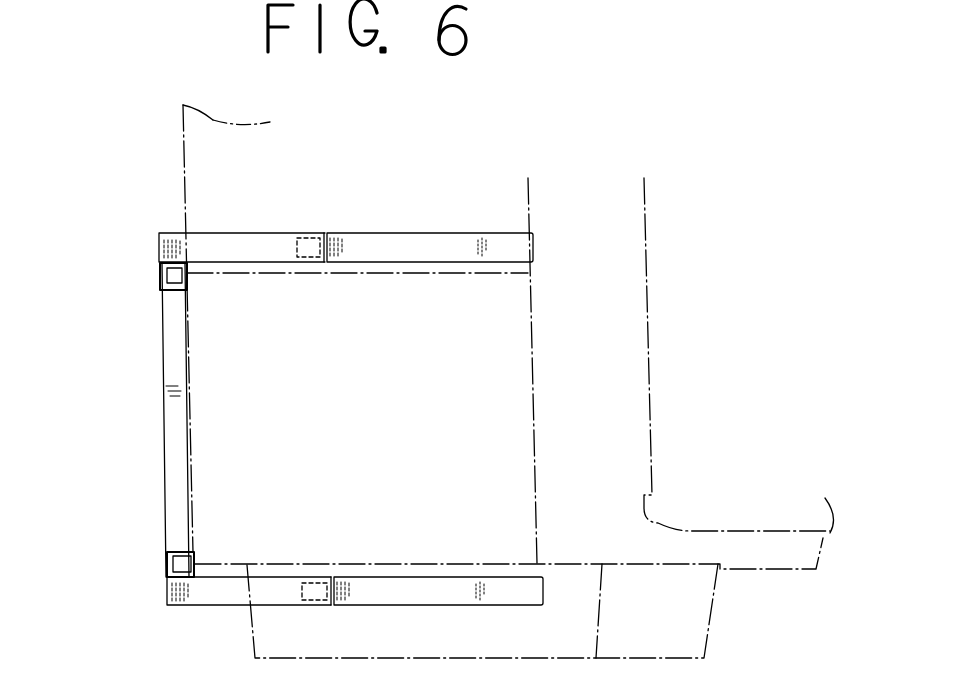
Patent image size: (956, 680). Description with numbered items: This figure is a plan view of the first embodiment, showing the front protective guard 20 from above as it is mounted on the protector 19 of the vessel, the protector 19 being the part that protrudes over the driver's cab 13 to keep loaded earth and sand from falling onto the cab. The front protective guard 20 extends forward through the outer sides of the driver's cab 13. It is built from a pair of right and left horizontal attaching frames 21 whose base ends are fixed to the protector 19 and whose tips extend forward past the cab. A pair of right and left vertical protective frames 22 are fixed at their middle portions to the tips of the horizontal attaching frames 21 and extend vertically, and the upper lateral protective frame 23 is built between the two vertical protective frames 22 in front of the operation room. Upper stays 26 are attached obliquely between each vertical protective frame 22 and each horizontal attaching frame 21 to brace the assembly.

The driver's cab 13 is at (210, 338).
The protector 19 is at (193, 150).
The front protective guard 20 is at (138, 421).
The horizontal attaching frame 21 is at (378, 242).
The vertical protective frame 22 is at (163, 275).
The upper lateral protective frame 23 is at (160, 377).
The upper stay 26 is at (244, 242).